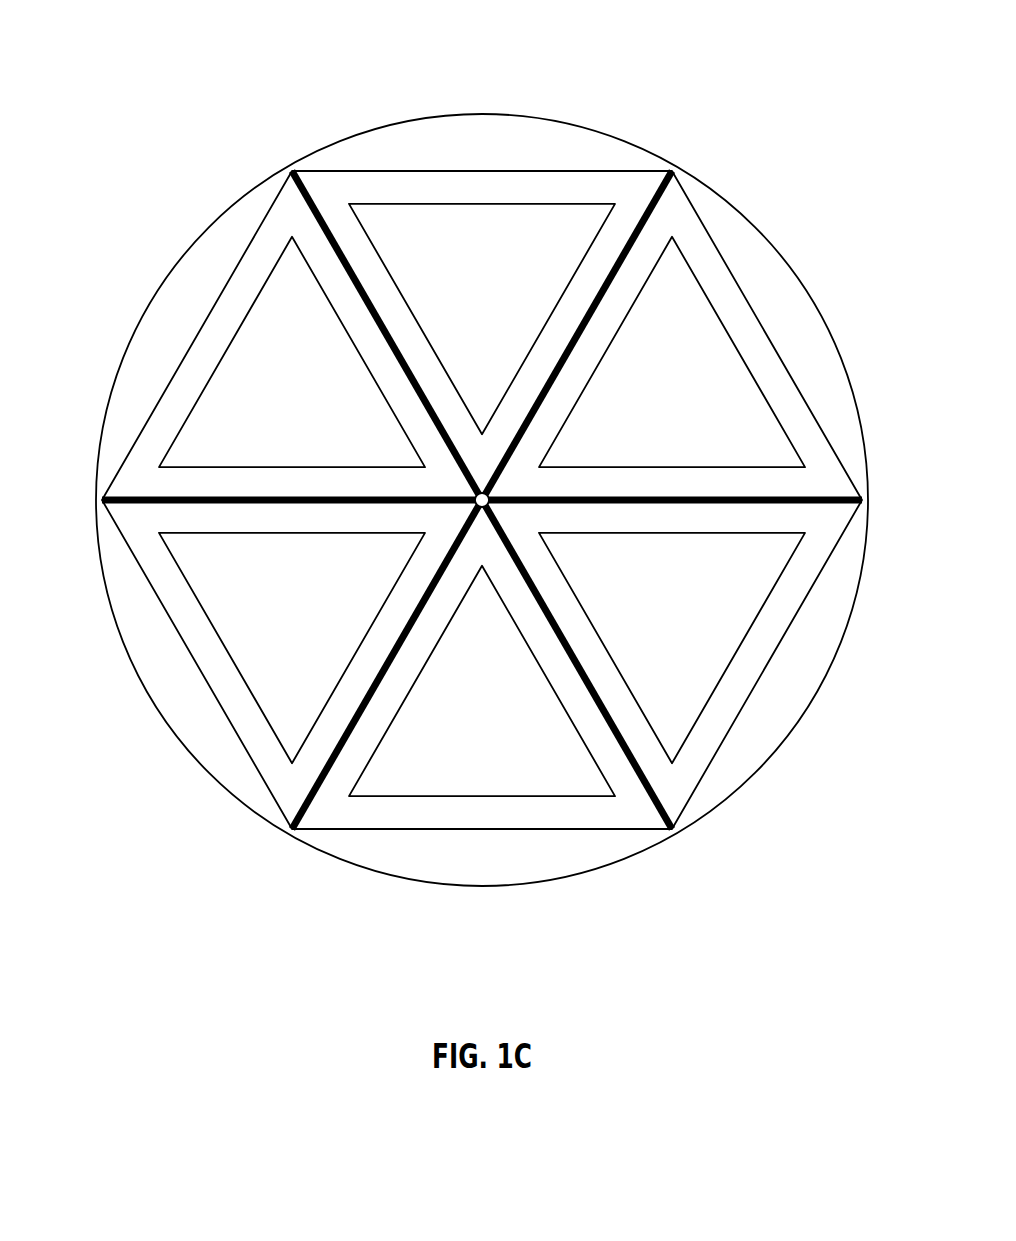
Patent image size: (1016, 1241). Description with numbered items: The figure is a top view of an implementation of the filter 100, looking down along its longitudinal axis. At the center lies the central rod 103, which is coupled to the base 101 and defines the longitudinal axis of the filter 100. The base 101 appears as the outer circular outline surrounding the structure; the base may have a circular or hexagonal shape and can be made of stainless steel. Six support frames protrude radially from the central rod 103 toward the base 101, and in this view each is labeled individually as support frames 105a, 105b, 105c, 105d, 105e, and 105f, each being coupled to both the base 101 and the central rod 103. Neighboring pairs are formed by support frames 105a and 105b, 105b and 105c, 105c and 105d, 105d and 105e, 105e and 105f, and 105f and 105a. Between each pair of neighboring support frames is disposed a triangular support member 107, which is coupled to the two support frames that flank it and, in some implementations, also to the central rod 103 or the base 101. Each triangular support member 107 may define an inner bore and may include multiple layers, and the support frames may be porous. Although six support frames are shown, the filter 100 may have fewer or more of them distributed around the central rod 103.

The filter 100 is at (477, 515).
The base 101 is at (477, 137).
The central rod 103 is at (478, 504).
The support frame 105a is at (671, 198).
The support frame 105b is at (822, 497).
The support frame 105c is at (659, 790).
The support frame 105d is at (305, 790).
The support frame 105e is at (133, 508).
The support frame 105f is at (293, 198).
The triangular support member 107 is at (198, 363).